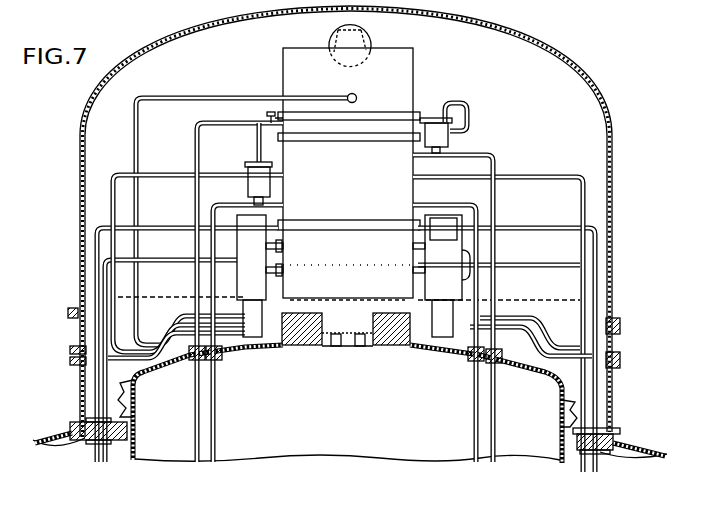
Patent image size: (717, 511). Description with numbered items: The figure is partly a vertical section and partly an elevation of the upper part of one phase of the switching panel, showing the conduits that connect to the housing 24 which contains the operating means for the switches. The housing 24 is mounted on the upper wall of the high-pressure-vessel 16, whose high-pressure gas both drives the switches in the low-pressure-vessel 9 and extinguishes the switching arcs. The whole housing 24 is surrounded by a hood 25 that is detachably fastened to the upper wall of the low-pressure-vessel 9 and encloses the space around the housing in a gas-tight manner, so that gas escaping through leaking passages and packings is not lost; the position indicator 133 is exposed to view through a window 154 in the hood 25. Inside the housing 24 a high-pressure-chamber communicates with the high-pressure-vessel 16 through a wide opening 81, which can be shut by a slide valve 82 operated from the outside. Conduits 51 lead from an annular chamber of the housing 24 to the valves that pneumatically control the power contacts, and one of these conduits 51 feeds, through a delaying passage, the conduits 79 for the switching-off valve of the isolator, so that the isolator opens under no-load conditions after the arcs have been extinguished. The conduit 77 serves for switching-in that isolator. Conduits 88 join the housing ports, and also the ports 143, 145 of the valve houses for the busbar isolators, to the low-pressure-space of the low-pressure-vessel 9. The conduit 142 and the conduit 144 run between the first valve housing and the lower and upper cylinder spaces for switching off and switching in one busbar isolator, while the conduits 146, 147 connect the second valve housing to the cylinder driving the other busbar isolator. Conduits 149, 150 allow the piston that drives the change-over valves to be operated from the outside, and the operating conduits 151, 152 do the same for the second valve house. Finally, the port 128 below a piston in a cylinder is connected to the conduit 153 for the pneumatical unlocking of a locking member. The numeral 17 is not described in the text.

The low-pressure-vessel 9 is at (661, 446).
The high-pressure-vessel 16 is at (562, 424).
The flange 17 is at (576, 403).
The housing 24 is at (349, 174).
The hood 25 is at (567, 62).
The conduits 51 is at (217, 418).
The conduit 77 is at (496, 403).
The conduits 79 is at (194, 412).
The opening 81 is at (362, 340).
The slide valve 82 is at (336, 333).
The conduits 88 is at (152, 173).
The port 128 is at (385, 90).
The position indicator 133 is at (367, 44).
The conduit 142 is at (120, 443).
The ports 143 is at (261, 300).
The conduit 144 is at (77, 426).
The ports 145 is at (260, 257).
The conduit 146 is at (563, 456).
The conduit 147 is at (613, 444).
The conduit 149 is at (70, 362).
The conduit 150 is at (70, 350).
The operating conduit 151 is at (617, 366).
The operating conduit 152 is at (616, 330).
The conduit 153 is at (68, 313).
The window 154 is at (332, 30).